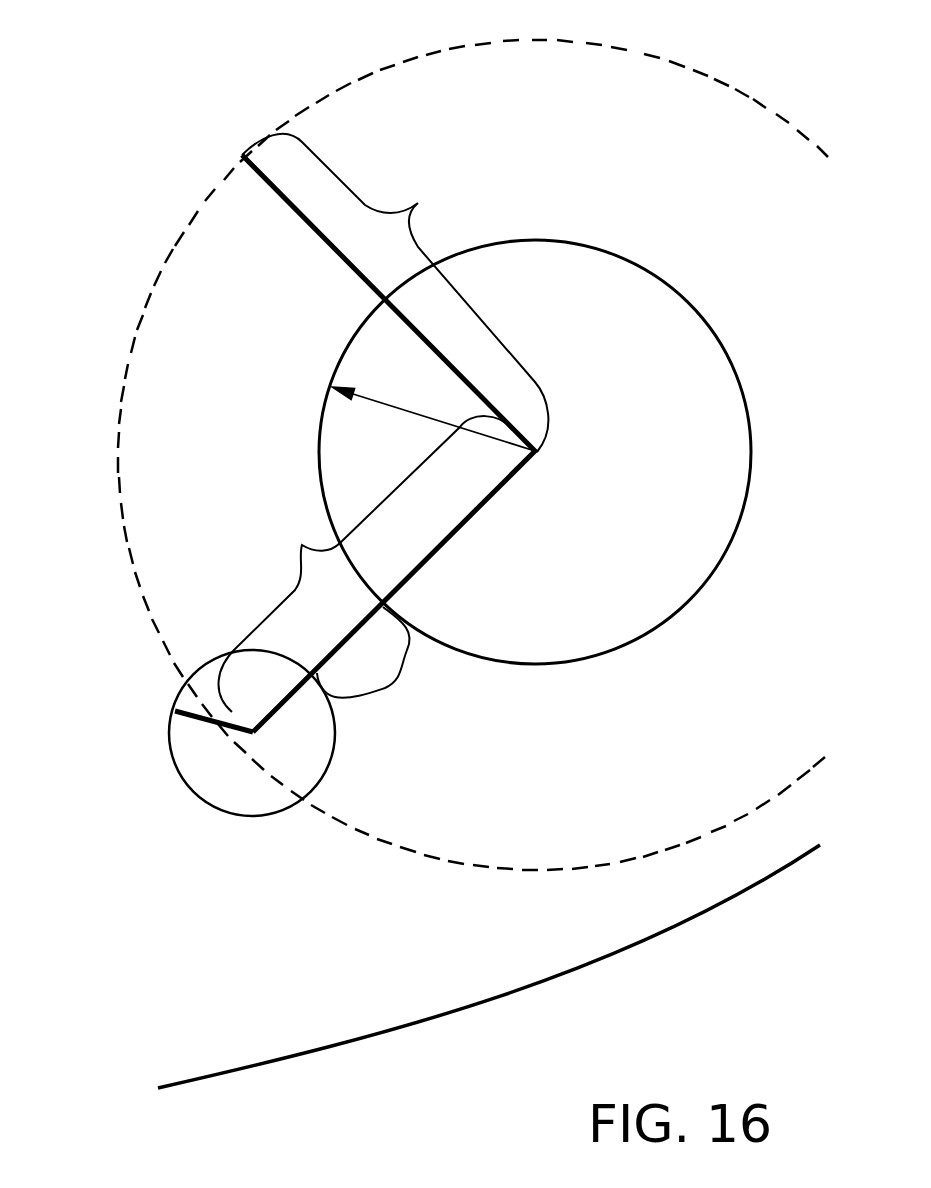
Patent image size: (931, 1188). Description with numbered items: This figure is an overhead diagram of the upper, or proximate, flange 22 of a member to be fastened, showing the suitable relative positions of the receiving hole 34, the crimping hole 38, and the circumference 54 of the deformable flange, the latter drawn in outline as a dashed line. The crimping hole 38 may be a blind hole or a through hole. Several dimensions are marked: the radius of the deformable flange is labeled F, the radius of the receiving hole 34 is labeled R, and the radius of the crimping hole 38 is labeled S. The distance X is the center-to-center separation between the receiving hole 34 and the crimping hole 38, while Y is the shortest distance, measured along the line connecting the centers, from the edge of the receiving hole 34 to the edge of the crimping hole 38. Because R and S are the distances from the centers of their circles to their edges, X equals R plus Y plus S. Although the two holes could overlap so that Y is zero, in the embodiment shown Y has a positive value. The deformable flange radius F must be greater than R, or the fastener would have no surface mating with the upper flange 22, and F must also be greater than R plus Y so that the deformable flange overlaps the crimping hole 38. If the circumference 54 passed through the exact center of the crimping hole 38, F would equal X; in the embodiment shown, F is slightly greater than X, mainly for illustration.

The circumference of the deformable flange 54 is at (180, 230).
The receiving hole 34 is at (609, 536).
The crimping hole 38 is at (312, 756).
The upper flange 22 is at (444, 956).
The radius of the crimping hole S is at (214, 731).
The radius of the deformable flange F is at (418, 203).
The radius of the receiving hole R is at (377, 399).
The center-to-center separation X is at (302, 545).
The edge-to-edge distance Y is at (392, 684).